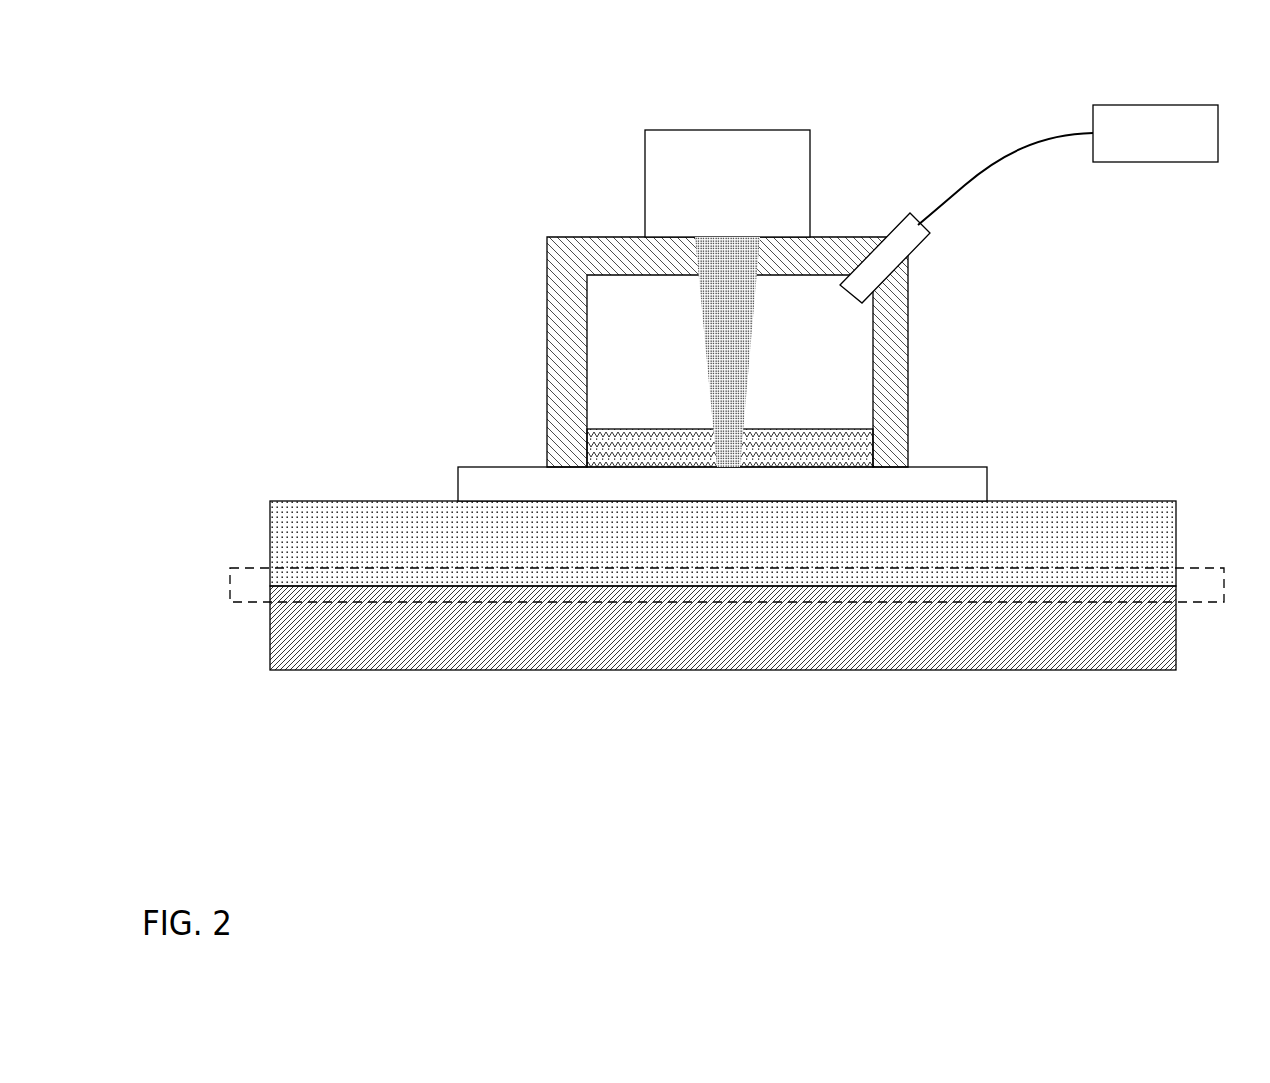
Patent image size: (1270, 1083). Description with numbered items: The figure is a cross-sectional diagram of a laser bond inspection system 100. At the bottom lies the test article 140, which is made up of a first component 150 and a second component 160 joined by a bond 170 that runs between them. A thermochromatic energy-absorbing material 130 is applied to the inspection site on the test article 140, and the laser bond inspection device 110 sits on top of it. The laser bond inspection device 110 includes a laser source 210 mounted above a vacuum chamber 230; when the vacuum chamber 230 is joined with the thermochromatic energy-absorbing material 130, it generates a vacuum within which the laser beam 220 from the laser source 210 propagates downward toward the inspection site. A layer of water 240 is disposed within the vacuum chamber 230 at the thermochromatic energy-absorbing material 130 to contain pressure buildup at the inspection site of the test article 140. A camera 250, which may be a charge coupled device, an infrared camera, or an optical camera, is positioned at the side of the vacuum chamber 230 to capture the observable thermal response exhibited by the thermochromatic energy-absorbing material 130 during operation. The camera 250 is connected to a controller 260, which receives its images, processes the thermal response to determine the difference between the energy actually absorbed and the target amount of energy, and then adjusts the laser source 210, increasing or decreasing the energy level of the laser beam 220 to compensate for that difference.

The laser bond inspection system 100 is at (290, 157).
The laser bond inspection device 110 is at (930, 210).
The thermochromatic energy-absorbing material 130 is at (987, 468).
The test article 140 is at (667, 504).
The first component 150 is at (275, 532).
The second component 160 is at (273, 660).
The bond 170 is at (228, 597).
The laser source 210 is at (655, 172).
The laser beam 220 is at (738, 357).
The vacuum chamber 230 is at (547, 300).
The layer of water 240 is at (862, 450).
The camera 250 is at (912, 233).
The controller 260 is at (1135, 162).